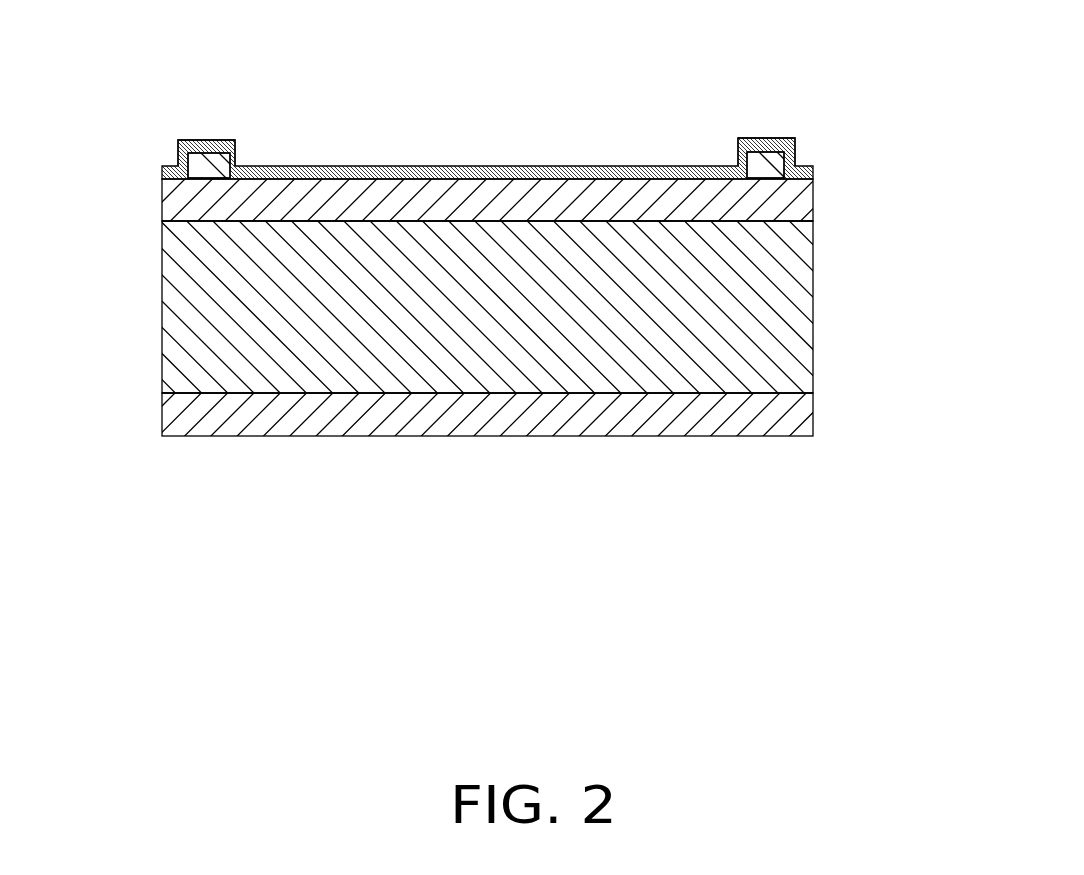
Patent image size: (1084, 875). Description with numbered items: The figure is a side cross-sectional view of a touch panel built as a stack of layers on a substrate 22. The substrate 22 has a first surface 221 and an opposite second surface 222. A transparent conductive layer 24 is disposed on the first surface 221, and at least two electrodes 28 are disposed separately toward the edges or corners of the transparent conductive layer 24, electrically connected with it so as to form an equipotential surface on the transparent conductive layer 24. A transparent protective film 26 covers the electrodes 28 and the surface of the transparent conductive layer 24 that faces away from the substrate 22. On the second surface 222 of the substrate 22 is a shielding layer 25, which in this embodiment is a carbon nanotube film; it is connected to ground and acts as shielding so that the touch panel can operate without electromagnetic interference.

The substrate 22 is at (750, 324).
The first surface 221 is at (242, 223).
The second surface 222 is at (257, 390).
The transparent conductive layer 24 is at (778, 201).
The shielding layer 25 is at (647, 412).
The transparent protective film 26 is at (343, 167).
The electrodes 28 is at (202, 152).